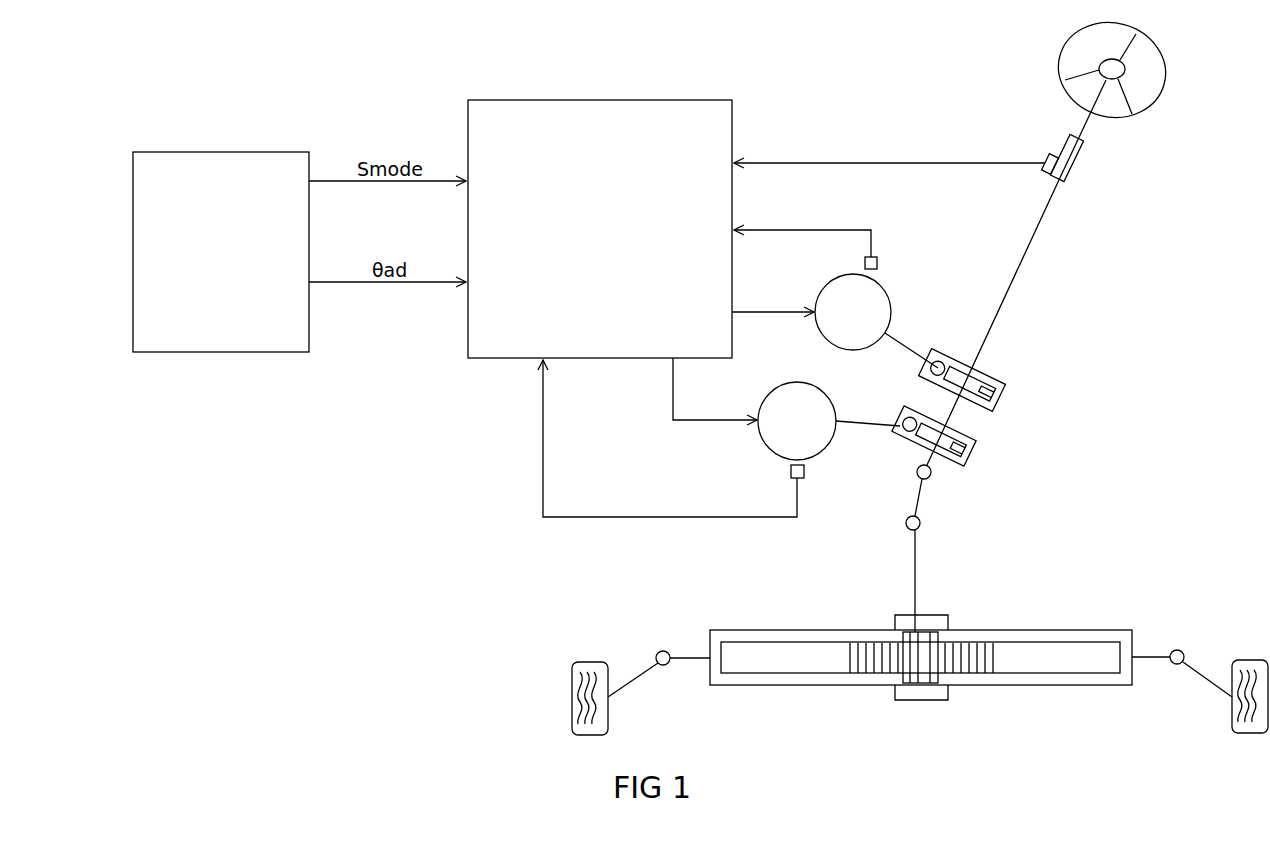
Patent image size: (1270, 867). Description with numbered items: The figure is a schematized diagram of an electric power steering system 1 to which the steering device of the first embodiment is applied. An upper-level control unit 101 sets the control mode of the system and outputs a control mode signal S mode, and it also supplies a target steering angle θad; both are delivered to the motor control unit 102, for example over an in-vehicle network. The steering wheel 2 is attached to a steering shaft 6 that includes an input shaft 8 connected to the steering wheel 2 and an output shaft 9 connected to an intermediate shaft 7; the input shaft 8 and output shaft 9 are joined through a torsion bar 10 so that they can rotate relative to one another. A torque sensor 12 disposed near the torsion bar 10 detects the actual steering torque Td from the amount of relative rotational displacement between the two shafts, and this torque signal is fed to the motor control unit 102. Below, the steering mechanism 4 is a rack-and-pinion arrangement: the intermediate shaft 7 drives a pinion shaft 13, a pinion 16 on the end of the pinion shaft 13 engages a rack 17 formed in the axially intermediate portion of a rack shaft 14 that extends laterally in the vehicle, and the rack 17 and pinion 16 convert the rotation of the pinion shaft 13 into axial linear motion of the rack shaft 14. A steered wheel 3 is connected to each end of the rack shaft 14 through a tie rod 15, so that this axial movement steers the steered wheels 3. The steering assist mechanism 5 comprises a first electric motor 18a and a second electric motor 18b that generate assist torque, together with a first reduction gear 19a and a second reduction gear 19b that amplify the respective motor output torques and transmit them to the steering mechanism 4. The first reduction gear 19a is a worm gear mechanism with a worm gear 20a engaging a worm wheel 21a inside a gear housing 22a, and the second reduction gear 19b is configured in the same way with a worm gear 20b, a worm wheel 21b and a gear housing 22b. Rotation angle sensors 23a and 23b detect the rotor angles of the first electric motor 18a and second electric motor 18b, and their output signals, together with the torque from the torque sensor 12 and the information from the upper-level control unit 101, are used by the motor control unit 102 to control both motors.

The electric power steering system 1 is at (426, 96).
The steering wheel 2 is at (1167, 72).
The steered wheel 3 is at (590, 662).
The steering mechanism 4 is at (996, 606).
The steering assist mechanism 5 is at (936, 258).
The steering shaft 6 is at (1160, 175).
The intermediate shaft 7 is at (928, 496).
The input shaft 8 is at (1086, 124).
The output shaft 9 is at (1052, 202).
The torsion bar 10 is at (1078, 168).
The torque sensor 12 is at (1045, 157).
The pinion shaft 13 is at (920, 568).
The rack shaft 14 is at (1050, 682).
The tie rod 15 is at (632, 686).
The pinion 16 is at (920, 684).
The rack 17 is at (863, 668).
The first electric motor 18a is at (788, 384).
The second electric motor 18b is at (830, 281).
The first reduction gear 19a is at (978, 441).
The second reduction gear 19b is at (957, 352).
The worm gear 20a is at (896, 452).
The worm gear 20b is at (938, 358).
The worm wheel 21a is at (968, 458).
The worm wheel 21b is at (991, 383).
The gear housing 22a is at (962, 466).
The gear housing 22b is at (1004, 408).
The rotation angle sensor 23a is at (790, 470).
The rotation angle sensor 23b is at (877, 262).
The upper-level control unit 101 is at (273, 152).
The motor control unit 102 is at (695, 100).